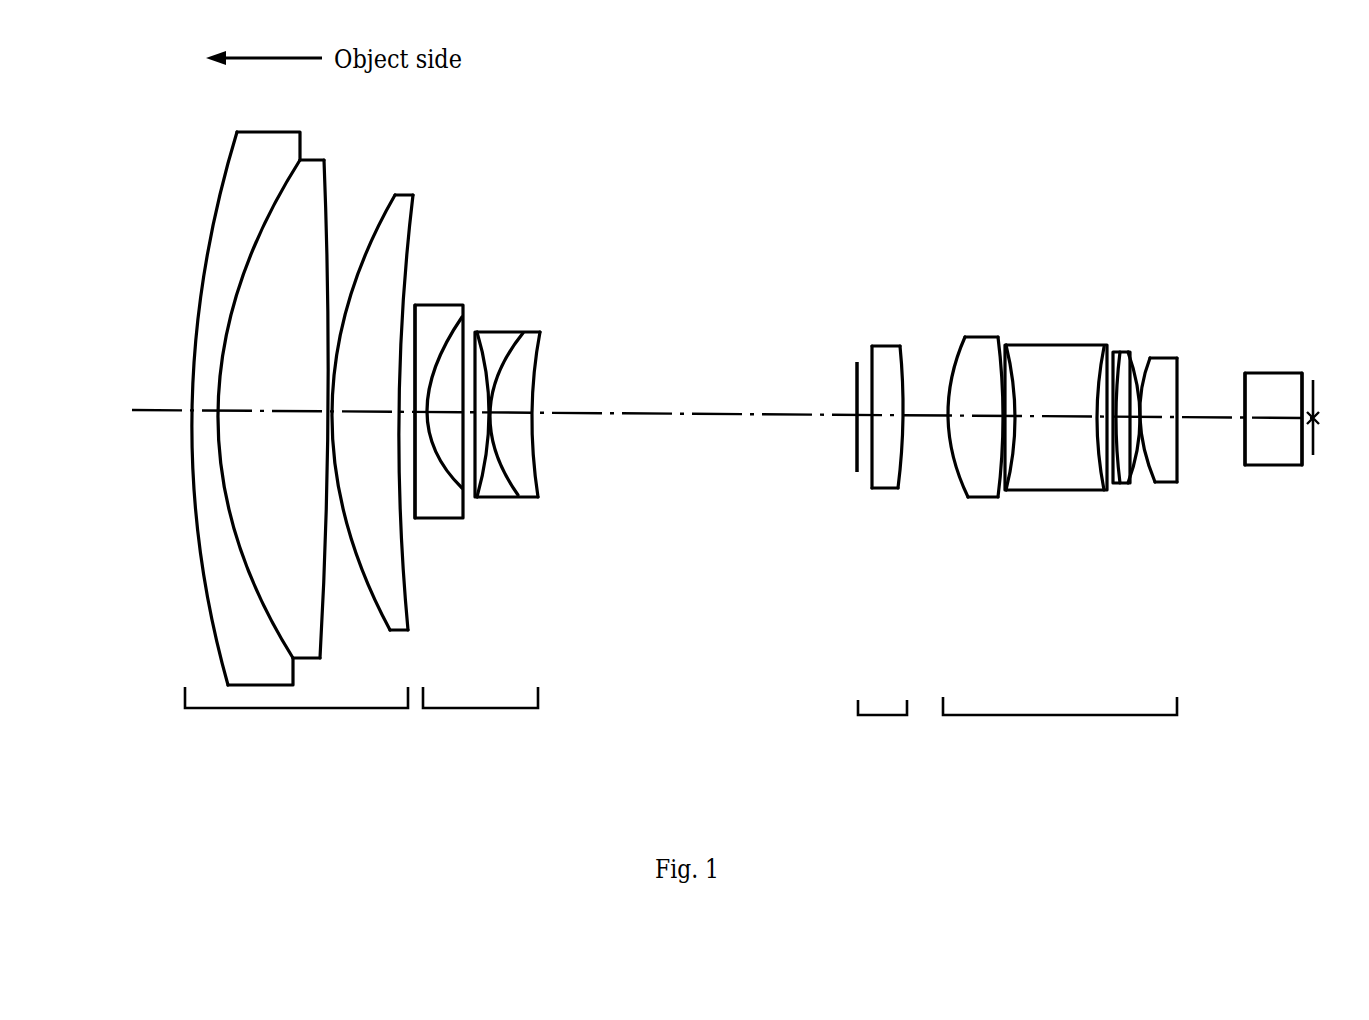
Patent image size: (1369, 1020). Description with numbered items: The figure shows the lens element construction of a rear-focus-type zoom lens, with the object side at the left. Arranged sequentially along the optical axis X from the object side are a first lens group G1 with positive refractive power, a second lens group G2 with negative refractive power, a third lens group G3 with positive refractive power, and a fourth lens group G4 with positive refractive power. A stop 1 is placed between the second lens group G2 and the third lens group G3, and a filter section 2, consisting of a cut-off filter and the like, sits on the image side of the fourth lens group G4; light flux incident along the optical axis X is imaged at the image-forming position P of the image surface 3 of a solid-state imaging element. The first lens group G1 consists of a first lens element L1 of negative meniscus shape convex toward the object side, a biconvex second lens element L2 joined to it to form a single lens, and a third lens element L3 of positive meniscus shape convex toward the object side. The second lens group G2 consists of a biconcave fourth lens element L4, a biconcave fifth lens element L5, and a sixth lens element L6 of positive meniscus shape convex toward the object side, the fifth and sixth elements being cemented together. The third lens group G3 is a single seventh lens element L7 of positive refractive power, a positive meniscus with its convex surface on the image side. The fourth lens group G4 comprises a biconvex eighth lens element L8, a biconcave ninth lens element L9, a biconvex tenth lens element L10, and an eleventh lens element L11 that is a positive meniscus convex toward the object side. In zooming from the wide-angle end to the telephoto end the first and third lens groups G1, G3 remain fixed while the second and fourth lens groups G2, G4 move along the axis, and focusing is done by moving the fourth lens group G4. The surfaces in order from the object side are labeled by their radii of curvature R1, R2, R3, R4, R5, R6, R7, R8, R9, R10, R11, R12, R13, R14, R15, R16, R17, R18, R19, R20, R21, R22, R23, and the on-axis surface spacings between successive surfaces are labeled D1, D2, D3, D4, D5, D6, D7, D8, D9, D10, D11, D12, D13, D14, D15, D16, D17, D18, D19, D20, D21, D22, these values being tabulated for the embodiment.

The optical axis X is at (170, 414).
The first lens element L1 is at (241, 389).
The second lens element L2 is at (328, 386).
The third lens element L3 is at (392, 386).
The fourth lens element L4 is at (448, 380).
The fifth lens element L5 is at (512, 386).
The sixth lens element L6 is at (568, 388).
The seventh lens element L7 is at (886, 389).
The eighth lens element L8 is at (983, 397).
The ninth lens element L9 is at (1056, 381).
The tenth lens element L10 is at (1138, 377).
The eleventh lens element L11 is at (1190, 381).
The radius of curvature of surface 1 R1 is at (225, 178).
The radius of curvature of surface 2 R2 is at (284, 175).
The radius of curvature of surface 3 R3 is at (330, 175).
The radius of curvature of surface 4 R4 is at (380, 215).
The radius of curvature of surface 5 R5 is at (416, 212).
The radius of curvature of surface 6 R6 is at (417, 306).
The radius of curvature of surface 7 R7 is at (458, 320).
The radius of curvature of surface 8 R8 is at (488, 345).
The radius of curvature of surface 9 R9 is at (516, 355).
The radius of curvature of surface 10 R10 is at (542, 362).
The radius of curvature of surface 11 R11 is at (855, 380).
The radius of curvature of surface 12 R12 is at (870, 360).
The radius of curvature of surface 13 R13 is at (902, 356).
The radius of curvature of surface 14 R14 is at (956, 370).
The radius of curvature of surface 15 R15 is at (1000, 375).
The radius of curvature of surface 16 R16 is at (1012, 362).
The radius of curvature of surface 17 R17 is at (1098, 365).
The radius of curvature of surface 18 R18 is at (1112, 356).
The radius of curvature of surface 19 R19 is at (1140, 360).
The radius of curvature of surface 20 R20 is at (1150, 372).
The radius of curvature of surface 21 R21 is at (1178, 390).
The radius of curvature of surface 22 R22 is at (1243, 394).
The radius of curvature of surface 23 R23 is at (1303, 378).
The on-axis surface spacing 1 D1 is at (203, 415).
The on-axis surface spacing 2 D2 is at (260, 413).
The on-axis surface spacing 3 D3 is at (323, 420).
The on-axis surface spacing 4 D4 is at (350, 420).
The on-axis surface spacing 5 D5 is at (397, 433).
The on-axis surface spacing 6 D6 is at (420, 423).
The on-axis surface spacing 7 D7 is at (458, 417).
The on-axis surface spacing 8 D8 is at (500, 420).
The on-axis surface spacing 9 D9 is at (533, 432).
The on-axis surface spacing 10 D10 is at (672, 418).
The on-axis surface spacing 11 D11 is at (850, 425).
The on-axis surface spacing 12 D12 is at (900, 440).
The on-axis surface spacing 13 D13 is at (918, 420).
The on-axis surface spacing 14 D14 is at (972, 425).
The on-axis surface spacing 15 D15 is at (1012, 430).
The on-axis surface spacing 16 D16 is at (1050, 425).
The on-axis surface spacing 17 D17 is at (1100, 440).
The on-axis surface spacing 18 D18 is at (1118, 430).
The on-axis surface spacing 19 D19 is at (1143, 430).
The on-axis surface spacing 20 D20 is at (1170, 445).
The on-axis surface spacing 21 D21 is at (1215, 425).
The on-axis surface spacing 22 D22 is at (1260, 425).
The stop 1 is at (855, 407).
The filter section 2 is at (1283, 395).
The image surface 3 is at (1321, 387).
The image-forming position P is at (1321, 418).
The first lens group G1 is at (296, 717).
The second lens group G2 is at (480, 718).
The third lens group G3 is at (882, 728).
The fourth lens group G4 is at (1060, 726).